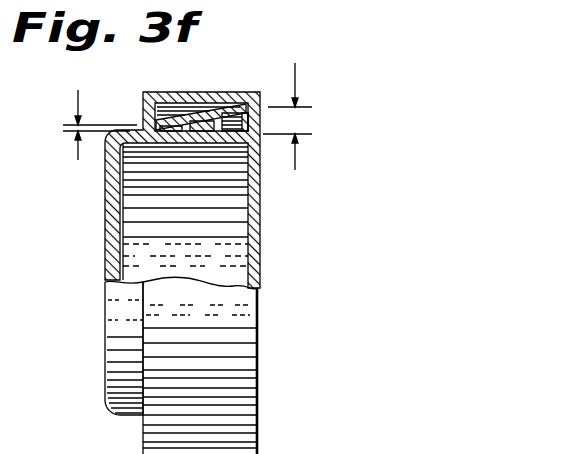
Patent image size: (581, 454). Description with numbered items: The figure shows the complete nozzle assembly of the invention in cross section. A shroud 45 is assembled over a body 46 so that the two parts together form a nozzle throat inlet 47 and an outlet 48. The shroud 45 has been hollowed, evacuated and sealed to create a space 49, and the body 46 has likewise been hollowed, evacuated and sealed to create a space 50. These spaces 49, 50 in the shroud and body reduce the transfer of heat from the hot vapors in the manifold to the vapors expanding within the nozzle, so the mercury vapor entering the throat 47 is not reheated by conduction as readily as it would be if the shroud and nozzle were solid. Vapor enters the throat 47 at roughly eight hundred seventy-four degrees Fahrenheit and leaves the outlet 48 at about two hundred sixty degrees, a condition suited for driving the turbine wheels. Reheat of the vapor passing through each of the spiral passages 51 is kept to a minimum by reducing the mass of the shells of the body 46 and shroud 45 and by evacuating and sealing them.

The shroud 45 is at (258, 433).
The body 46 is at (112, 416).
The nozzle throat inlet 47 is at (65, 127).
The outlet 48 is at (293, 118).
The space 49 is at (187, 112).
The space 50 is at (143, 248).
The spiral passages 51 is at (238, 124).